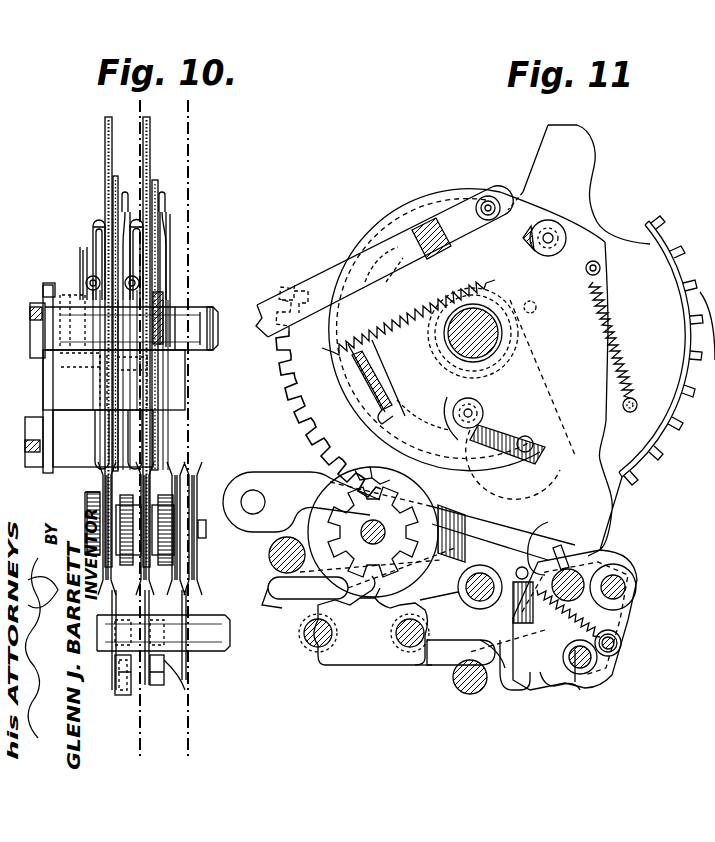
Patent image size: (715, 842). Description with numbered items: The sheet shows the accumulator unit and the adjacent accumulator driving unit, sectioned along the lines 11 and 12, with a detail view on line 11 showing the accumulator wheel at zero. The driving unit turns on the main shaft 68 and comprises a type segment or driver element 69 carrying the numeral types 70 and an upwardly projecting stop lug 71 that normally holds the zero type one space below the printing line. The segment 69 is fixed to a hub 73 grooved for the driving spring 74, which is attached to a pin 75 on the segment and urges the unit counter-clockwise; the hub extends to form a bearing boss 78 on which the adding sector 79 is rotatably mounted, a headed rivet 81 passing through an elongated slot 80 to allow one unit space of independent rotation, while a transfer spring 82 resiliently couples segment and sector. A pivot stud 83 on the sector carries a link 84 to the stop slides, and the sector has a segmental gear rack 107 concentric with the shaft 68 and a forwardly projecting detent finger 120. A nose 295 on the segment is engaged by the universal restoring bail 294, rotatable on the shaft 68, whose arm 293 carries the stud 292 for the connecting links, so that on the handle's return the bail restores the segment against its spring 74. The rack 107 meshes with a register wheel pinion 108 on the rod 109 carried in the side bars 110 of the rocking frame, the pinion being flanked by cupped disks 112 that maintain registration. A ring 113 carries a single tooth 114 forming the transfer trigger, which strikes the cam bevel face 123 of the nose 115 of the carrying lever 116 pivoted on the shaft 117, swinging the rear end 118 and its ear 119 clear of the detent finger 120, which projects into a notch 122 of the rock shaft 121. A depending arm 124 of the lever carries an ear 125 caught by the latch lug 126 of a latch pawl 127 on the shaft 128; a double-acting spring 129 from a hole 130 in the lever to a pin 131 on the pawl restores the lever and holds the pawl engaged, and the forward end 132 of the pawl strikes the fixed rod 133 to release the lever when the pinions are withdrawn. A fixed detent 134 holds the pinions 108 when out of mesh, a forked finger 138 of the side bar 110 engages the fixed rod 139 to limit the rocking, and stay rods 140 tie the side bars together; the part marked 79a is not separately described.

In FIG. 10, the section line 11 is at (188, 750).
In FIG. 10, the section line 12 is at (140, 750).
In FIG. 10, the main shaft 68 is at (37, 310).
In FIG. 11, the main shaft 68 is at (495, 336).
In FIG. 11, the driver element or type segment 69 is at (650, 254).
In FIG. 11, the numeral types 70 is at (690, 270).
In FIG. 10, the stop lug 71 is at (143, 129).
In FIG. 11, the stop lug 71 is at (579, 184).
In FIG. 11, the hub 73 is at (508, 348).
In FIG. 10, the driving spring 74 is at (100, 270).
In FIG. 11, the driving spring 74 is at (316, 390).
In FIG. 11, the pin 75 is at (536, 305).
In FIG. 10, the bearing boss 78 is at (165, 307).
In FIG. 11, the bearing boss 78 is at (450, 345).
In FIG. 11, the adding sector 79 is at (600, 488).
In FIG. 11, the bracket 79a is at (456, 422).
In FIG. 11, the elongated slot 80 is at (537, 219).
In FIG. 10, the headed rivet 81 is at (98, 234).
In FIG. 11, the headed rivet 81 is at (556, 238).
In FIG. 11, the transfer spring 82 is at (626, 352).
In FIG. 10, the pivot stud 83 is at (165, 202).
In FIG. 11, the pivot stud 83 is at (478, 203).
In FIG. 10, the link 84 is at (130, 276).
In FIG. 11, the link 84 is at (357, 267).
In FIG. 10, the segmental gear rack 107 is at (118, 402).
In FIG. 11, the segmental gear rack 107 is at (338, 448).
In FIG. 10, the register wheel pinion 108 is at (193, 497).
In FIG. 11, the register wheel pinion 108 is at (335, 505).
In FIG. 10, the transverse rod 109 is at (103, 518).
In FIG. 11, the transverse rod 109 is at (383, 523).
In FIG. 11, the side bars 110 is at (380, 532).
In FIG. 10, the cupped disks 112 is at (200, 500).
In FIG. 11, the cupped disks 112 is at (502, 518).
In FIG. 10, the ring 113 is at (96, 549).
In FIG. 10, the trigger tooth 114 is at (182, 488).
In FIG. 11, the nose 115 is at (318, 606).
In FIG. 11, the carrying lever 116 is at (498, 558).
In FIG. 11, the transverse shaft 117 is at (470, 590).
In FIG. 11, the rear end of carrying lever 118 is at (548, 522).
In FIG. 11, the laterally extending ear 119 is at (558, 548).
In FIG. 11, the detent finger 120 is at (570, 562).
In FIG. 11, the rock shaft 121 is at (588, 620).
In FIG. 11, the notch 122 is at (630, 575).
In FIG. 10, the cam bevel face 123 is at (165, 580).
In FIG. 11, the cam bevel face 123 is at (361, 573).
In FIG. 10, the depending arm 124 is at (175, 660).
In FIG. 11, the depending arm 124 is at (466, 651).
In FIG. 10, the laterally projecting ear 125 is at (122, 682).
In FIG. 11, the laterally projecting ear 125 is at (505, 692).
In FIG. 11, the latch lug 126 is at (457, 682).
In FIG. 10, the latch pawl 127 is at (168, 695).
In FIG. 11, the latch pawl 127 is at (548, 690).
In FIG. 11, the transverse shaft 128 is at (598, 668).
In FIG. 11, the double-acting spring 129 is at (612, 622).
In FIG. 11, the hole 130 is at (518, 567).
In FIG. 11, the pin 131 is at (622, 648).
In FIG. 11, the forward end of latch pawl 132 is at (430, 658).
In FIG. 11, the fixed rod 133 is at (472, 695).
In FIG. 10, the fixed detent 134 is at (172, 596).
In FIG. 11, the fixed detent 134 is at (372, 608).
In FIG. 11, the forwardly projecting finger 138 is at (278, 602).
In FIG. 11, the fixed transverse rod 139 is at (283, 565).
In FIG. 11, the transverse stay rod 140 is at (636, 586).
In FIG. 11, the stud 292 is at (536, 446).
In FIG. 11, the arm 293 is at (528, 374).
In FIG. 10, the universal restoring bail 294 is at (57, 378).
In FIG. 11, the universal restoring bail 294 is at (380, 417).
In FIG. 11, the nose or stop edge 295 is at (408, 317).